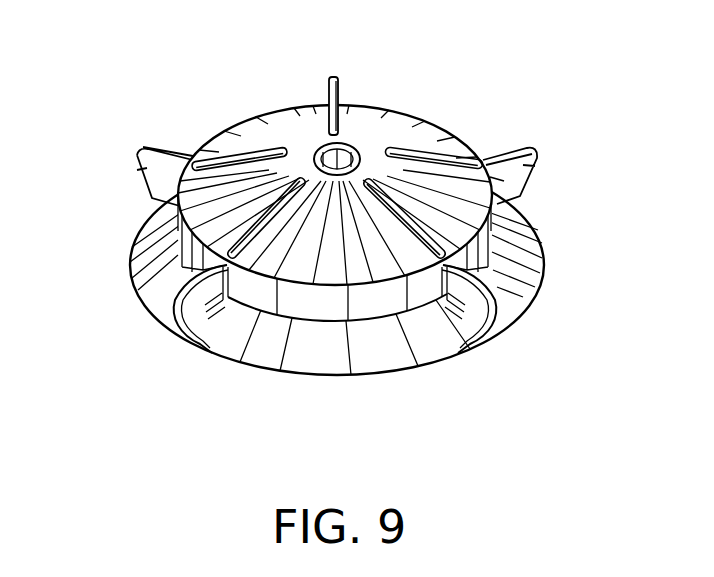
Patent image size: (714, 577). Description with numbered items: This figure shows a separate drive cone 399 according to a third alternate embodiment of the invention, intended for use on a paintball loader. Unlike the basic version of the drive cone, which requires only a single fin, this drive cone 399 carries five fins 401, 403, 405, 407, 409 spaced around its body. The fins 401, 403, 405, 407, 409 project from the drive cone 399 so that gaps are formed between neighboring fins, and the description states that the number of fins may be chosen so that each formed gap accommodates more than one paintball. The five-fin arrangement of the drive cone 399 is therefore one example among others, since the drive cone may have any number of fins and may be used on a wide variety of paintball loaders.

The drive cone 399 is at (359, 269).
The fin 401 is at (192, 317).
The fin 403 is at (487, 310).
The fin 405 is at (523, 165).
The fin 407 is at (328, 80).
The fin 409 is at (145, 170).